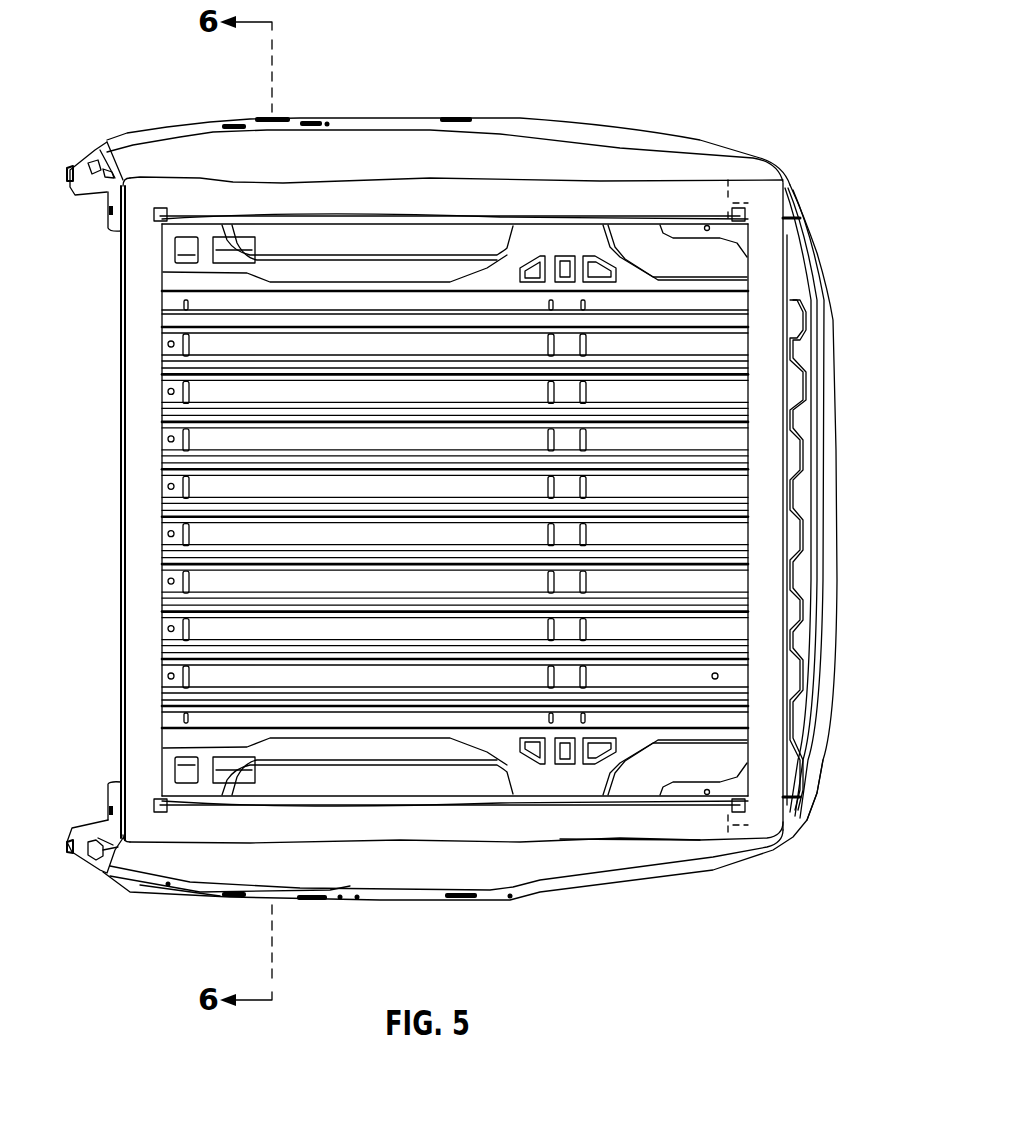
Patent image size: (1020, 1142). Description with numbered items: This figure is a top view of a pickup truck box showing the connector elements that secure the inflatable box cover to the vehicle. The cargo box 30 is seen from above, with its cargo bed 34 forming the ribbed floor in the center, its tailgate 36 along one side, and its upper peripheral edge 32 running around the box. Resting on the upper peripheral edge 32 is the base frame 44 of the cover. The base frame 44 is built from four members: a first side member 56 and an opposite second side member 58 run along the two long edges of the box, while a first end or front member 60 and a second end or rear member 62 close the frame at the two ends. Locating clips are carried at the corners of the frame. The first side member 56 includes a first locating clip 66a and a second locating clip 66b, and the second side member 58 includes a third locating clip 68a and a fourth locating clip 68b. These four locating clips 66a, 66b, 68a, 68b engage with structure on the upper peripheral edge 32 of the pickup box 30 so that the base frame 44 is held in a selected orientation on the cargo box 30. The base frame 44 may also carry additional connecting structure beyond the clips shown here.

The cargo box 30 is at (178, 906).
The upper peripheral edge 32 is at (100, 836).
The cargo bed 34 is at (165, 513).
The tailgate 36 is at (852, 607).
The base frame 44 is at (426, 868).
The first side member 56 is at (520, 852).
The second side member 58 is at (550, 172).
The front member 60 is at (112, 405).
The rear member 62 is at (793, 347).
The first locating clip 66a is at (155, 803).
The second locating clip 66b is at (746, 808).
The third locating clip 68a is at (155, 217).
The fourth locating clip 68b is at (740, 212).